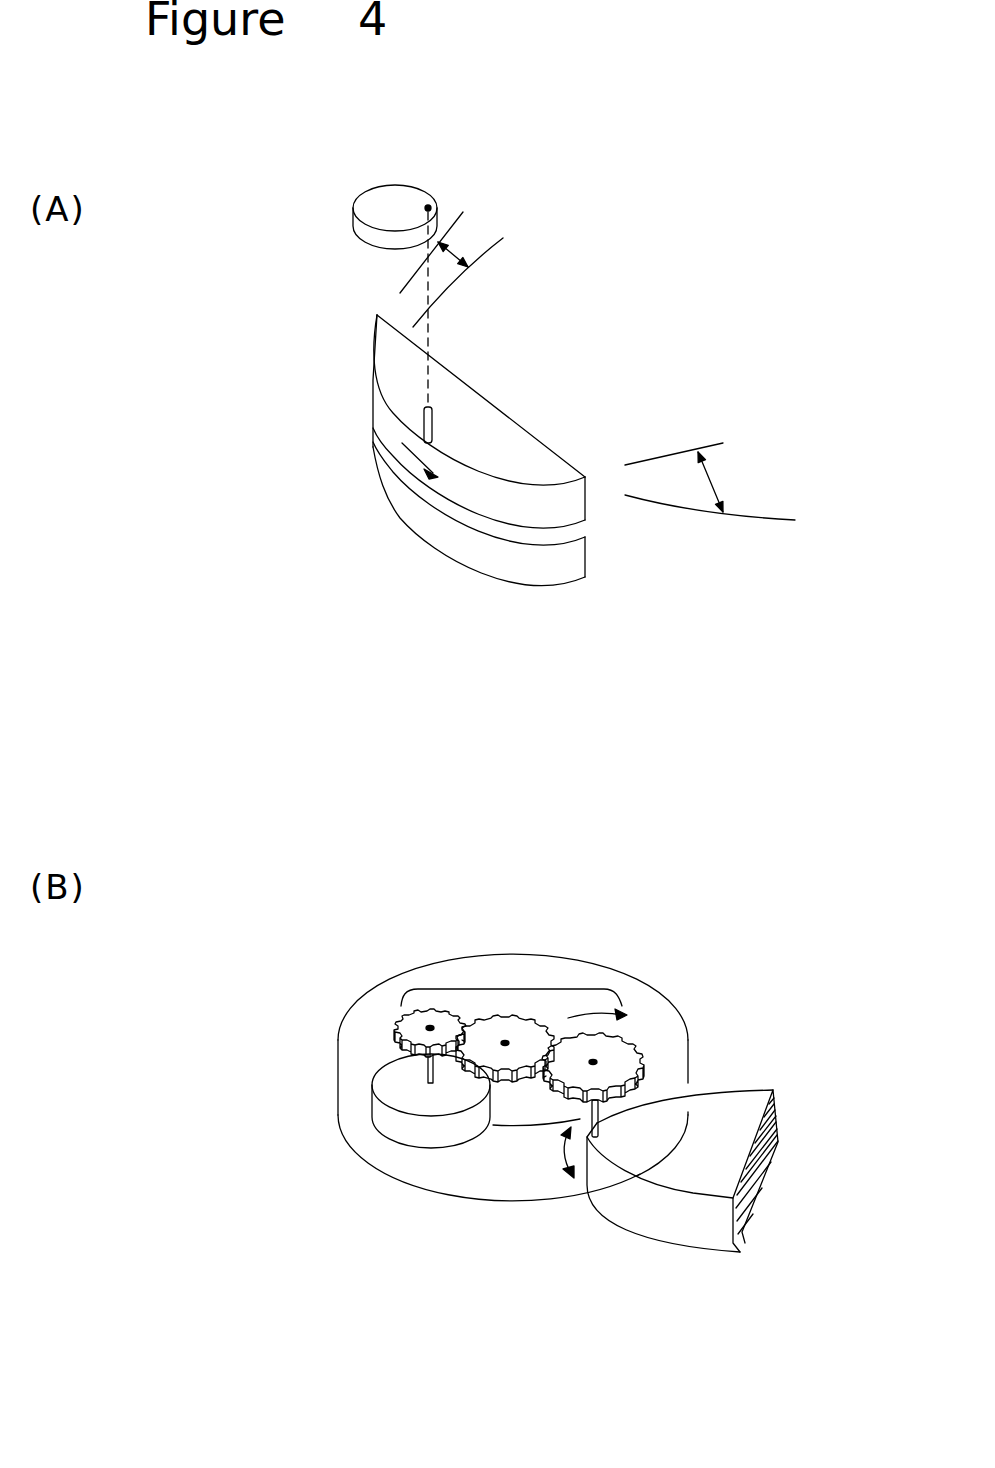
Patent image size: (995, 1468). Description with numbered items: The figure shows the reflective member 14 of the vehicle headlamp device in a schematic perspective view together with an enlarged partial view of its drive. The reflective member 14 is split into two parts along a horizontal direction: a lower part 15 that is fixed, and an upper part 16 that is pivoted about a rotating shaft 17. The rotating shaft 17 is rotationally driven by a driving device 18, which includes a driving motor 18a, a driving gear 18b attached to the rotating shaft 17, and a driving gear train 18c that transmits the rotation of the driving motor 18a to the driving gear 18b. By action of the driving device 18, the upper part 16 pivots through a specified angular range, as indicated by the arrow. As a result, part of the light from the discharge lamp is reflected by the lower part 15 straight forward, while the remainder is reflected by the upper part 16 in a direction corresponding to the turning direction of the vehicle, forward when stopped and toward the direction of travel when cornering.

The reflective member 14 is at (655, 262).
The lower part 15 is at (447, 550).
The upper part 16 is at (383, 412).
The rotating shaft 17 is at (433, 428).
The driving device 18 is at (367, 232).
The driving motor 18a is at (428, 1133).
The driving gear 18b is at (633, 1053).
The driving gear train 18c is at (508, 985).